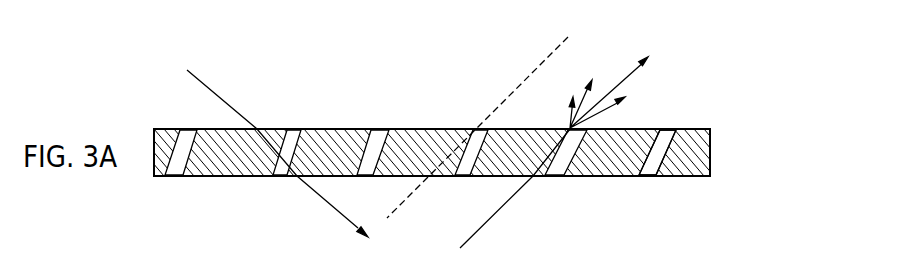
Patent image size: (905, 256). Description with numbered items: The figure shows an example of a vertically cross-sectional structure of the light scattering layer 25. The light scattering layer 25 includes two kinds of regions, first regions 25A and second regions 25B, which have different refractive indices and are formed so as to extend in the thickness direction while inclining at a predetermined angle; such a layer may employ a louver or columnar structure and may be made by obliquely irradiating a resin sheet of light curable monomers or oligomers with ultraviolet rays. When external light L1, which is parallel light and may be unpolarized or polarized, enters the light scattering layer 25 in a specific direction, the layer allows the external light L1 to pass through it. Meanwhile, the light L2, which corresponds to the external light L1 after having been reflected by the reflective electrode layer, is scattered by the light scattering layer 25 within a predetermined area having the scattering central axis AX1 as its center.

The light scattering layer 25 is at (692, 43).
The first regions 25A is at (697, 148).
The second regions 25B is at (644, 177).
The external light L1 is at (218, 92).
The light L2 is at (493, 218).
The scattering central axis AX1 is at (523, 85).